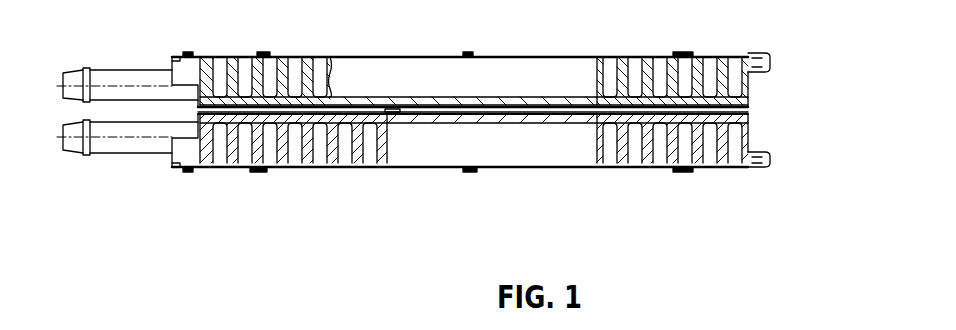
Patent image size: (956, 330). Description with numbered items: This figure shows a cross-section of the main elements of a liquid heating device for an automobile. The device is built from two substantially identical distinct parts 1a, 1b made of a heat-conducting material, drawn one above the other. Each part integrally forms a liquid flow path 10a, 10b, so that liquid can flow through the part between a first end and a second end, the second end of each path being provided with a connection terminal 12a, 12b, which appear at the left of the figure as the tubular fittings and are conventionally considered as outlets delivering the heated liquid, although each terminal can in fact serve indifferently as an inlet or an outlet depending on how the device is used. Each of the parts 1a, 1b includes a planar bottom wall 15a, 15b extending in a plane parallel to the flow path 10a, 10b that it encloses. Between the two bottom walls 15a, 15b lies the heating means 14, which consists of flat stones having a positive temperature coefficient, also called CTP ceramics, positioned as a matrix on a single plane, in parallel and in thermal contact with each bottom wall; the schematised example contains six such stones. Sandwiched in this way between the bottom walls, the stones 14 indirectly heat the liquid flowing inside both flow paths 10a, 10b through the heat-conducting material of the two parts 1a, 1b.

The distinct part 1a is at (738, 65).
The distinct part 1b is at (740, 150).
The liquid flow path 10a is at (268, 62).
The liquid flow path 10b is at (245, 153).
The connection terminal 12a is at (147, 77).
The connection terminal 12b is at (131, 137).
The heating means 14 is at (447, 110).
The planar bottom wall 15a is at (503, 102).
The planar bottom wall 15b is at (484, 118).